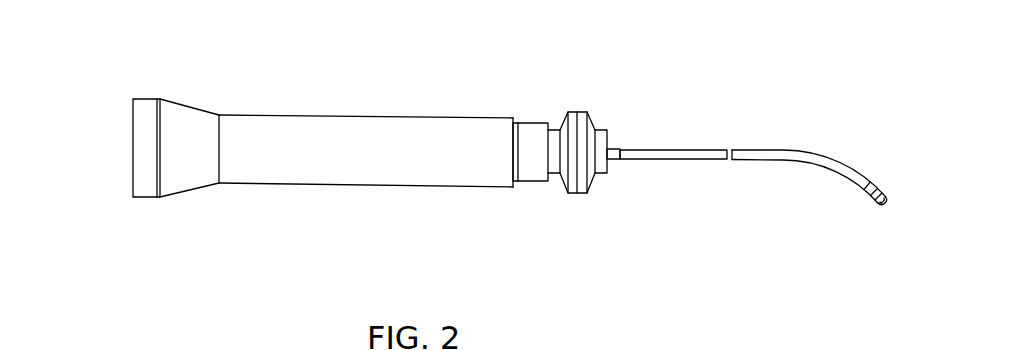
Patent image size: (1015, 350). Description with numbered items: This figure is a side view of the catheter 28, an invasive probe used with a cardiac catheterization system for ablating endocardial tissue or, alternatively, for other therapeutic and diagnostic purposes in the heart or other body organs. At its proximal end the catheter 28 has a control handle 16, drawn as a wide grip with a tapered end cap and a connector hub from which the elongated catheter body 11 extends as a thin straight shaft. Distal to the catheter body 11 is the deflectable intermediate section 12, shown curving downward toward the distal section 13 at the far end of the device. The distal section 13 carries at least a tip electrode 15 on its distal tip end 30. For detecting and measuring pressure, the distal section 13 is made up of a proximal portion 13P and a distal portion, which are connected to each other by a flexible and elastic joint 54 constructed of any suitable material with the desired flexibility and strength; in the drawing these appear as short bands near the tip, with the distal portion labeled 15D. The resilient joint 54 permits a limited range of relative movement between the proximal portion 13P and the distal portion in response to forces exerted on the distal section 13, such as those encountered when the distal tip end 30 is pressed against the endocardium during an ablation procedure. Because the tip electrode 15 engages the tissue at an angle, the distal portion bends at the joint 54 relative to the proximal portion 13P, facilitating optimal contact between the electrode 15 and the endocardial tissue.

The catheter 28 is at (472, 86).
The control handle 16 is at (284, 117).
The elongated catheter body 11 is at (681, 156).
The deflectable intermediate section 12 is at (810, 162).
The distal section 13 is at (877, 203).
The proximal portion 13P is at (877, 186).
The flexible and elastic joint 54 is at (884, 192).
The distal tip portion 15D is at (891, 196).
The distal tip end 30 is at (893, 203).
The tip electrode 15 is at (888, 207).